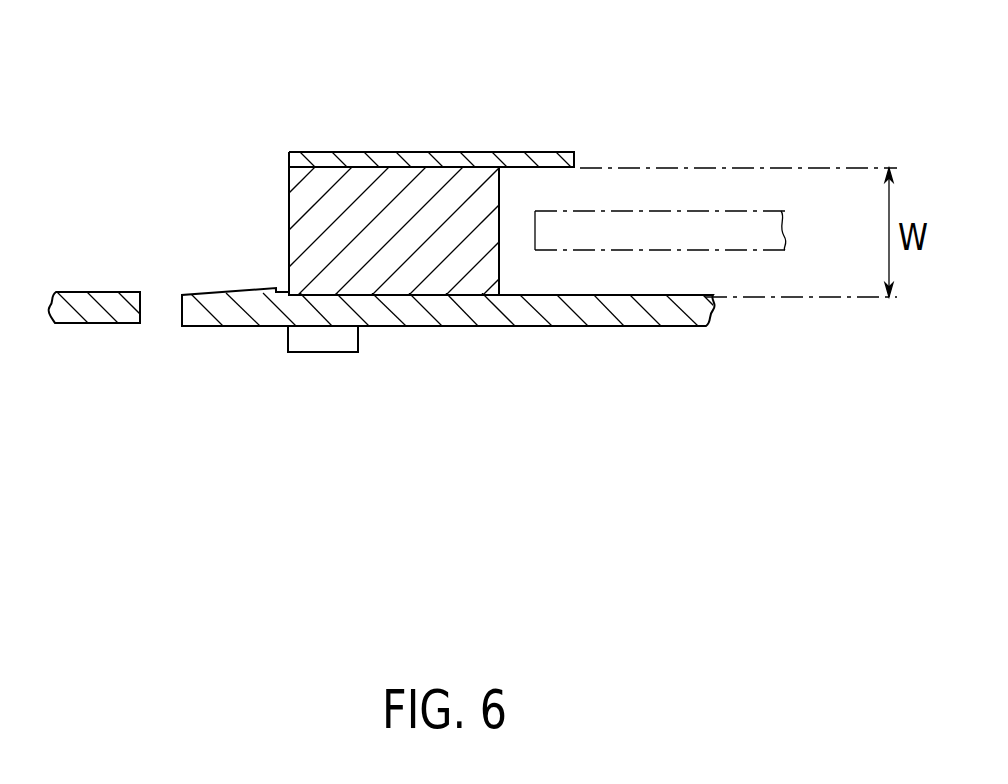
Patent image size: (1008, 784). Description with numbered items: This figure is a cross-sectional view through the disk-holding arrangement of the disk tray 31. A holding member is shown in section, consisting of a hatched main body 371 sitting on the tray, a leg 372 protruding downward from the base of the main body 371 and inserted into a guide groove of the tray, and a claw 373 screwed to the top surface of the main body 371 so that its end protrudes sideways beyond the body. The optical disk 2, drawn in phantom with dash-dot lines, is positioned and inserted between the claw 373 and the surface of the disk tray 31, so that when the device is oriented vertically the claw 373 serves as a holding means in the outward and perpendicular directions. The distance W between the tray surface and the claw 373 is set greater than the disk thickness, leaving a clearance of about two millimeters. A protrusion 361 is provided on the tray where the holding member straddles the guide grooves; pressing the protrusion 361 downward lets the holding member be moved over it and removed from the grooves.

The optical disk 2 is at (682, 225).
The disk tray 31 is at (83, 298).
The protrusion 361 is at (207, 298).
The main body 371 is at (336, 180).
The legs 372 is at (329, 343).
The claw 373 is at (452, 162).